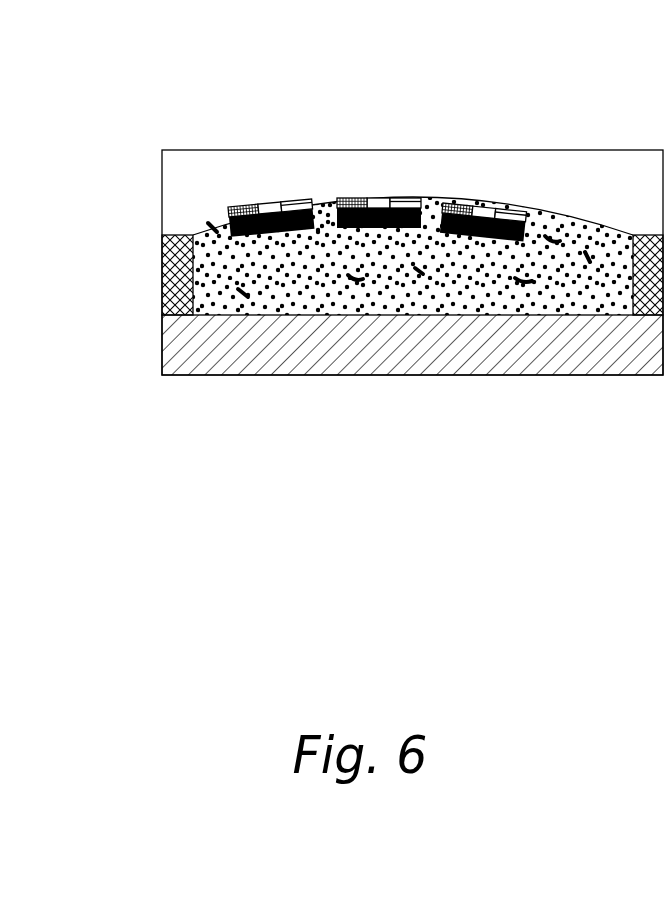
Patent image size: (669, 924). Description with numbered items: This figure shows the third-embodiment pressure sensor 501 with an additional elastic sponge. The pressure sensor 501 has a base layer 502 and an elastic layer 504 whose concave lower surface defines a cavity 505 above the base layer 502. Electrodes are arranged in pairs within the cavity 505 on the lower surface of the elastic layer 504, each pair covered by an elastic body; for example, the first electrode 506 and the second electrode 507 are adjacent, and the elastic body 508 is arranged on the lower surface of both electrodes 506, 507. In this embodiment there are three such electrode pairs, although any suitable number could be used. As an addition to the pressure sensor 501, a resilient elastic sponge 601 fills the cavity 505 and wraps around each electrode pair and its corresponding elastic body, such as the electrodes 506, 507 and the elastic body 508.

The pressure sensor 501 is at (354, 236).
The base layer 502 is at (447, 363).
The elastic layer 504 is at (500, 160).
The cavity 505 is at (573, 270).
The first electrode 506 is at (341, 157).
The second electrode 507 is at (425, 157).
The elastic body 508 is at (332, 208).
The resilient elastic sponge 601 is at (358, 285).